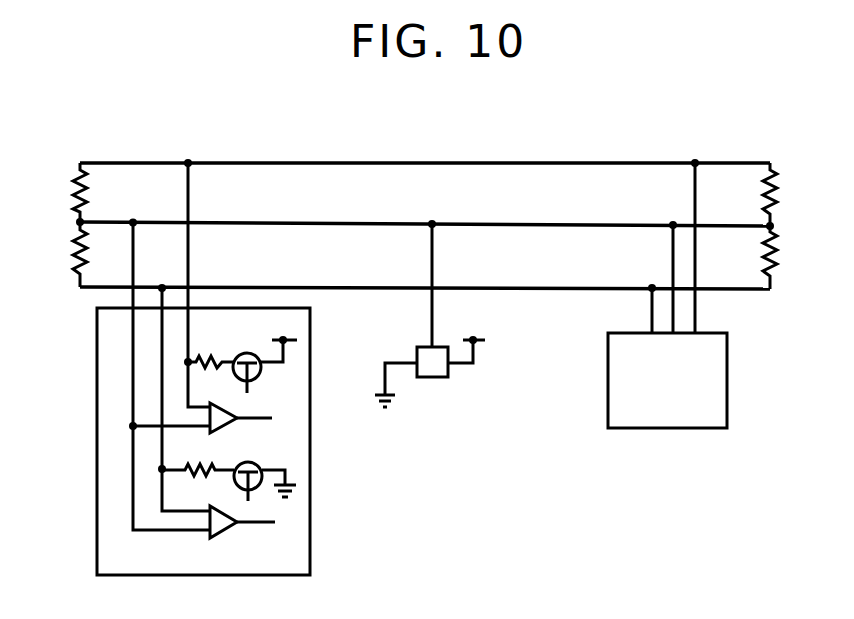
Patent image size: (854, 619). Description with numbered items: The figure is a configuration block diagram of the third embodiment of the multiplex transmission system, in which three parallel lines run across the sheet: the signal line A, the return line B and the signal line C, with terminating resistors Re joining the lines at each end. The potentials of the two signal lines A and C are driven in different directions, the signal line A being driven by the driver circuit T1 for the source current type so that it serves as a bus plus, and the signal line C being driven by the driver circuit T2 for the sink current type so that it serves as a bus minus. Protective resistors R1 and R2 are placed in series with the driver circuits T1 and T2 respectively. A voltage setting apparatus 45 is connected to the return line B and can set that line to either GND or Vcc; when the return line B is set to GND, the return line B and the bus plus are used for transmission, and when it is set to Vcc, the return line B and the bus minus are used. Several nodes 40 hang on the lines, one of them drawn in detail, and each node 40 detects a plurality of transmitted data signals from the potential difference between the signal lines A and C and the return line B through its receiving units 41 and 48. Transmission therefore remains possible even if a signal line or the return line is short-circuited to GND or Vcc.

The node 40 is at (412, 367).
The receiving unit 41 is at (238, 411).
The voltage setting apparatus 45 is at (432, 377).
The receiving unit 48 is at (238, 528).
The signal line A is at (530, 163).
The return line B is at (530, 225).
The signal line C is at (530, 289).
The terminating resistor Re is at (423, 226).
The protective resistor R1 is at (210, 345).
The driver circuit for the source current type T1 is at (265, 358).
The protective resistor R2 is at (198, 456).
The driver circuit for the sink current type T2 is at (265, 468).